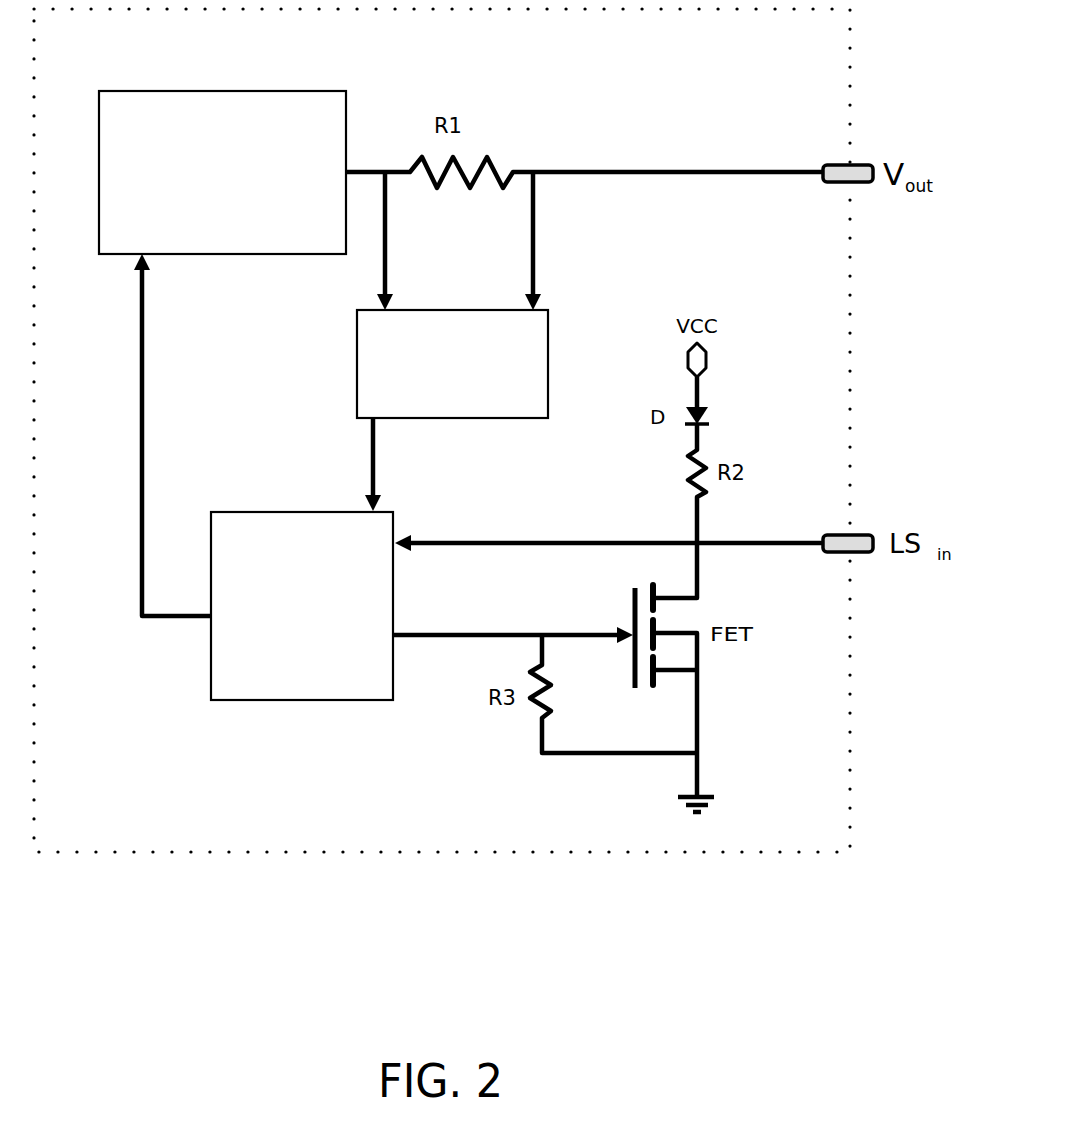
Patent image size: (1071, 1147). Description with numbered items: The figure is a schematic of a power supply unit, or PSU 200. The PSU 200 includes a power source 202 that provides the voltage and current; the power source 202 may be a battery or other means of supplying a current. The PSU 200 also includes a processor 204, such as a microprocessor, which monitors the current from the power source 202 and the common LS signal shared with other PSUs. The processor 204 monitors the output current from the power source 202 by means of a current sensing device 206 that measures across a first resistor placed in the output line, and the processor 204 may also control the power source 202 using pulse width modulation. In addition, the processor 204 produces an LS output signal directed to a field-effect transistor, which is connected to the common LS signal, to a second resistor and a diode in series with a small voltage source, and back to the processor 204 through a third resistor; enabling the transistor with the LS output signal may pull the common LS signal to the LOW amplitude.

The power supply unit (PSU) 200 is at (442, 430).
The power source 202 is at (222, 172).
The processor 204 is at (302, 606).
The current sensing device 206 is at (452, 364).